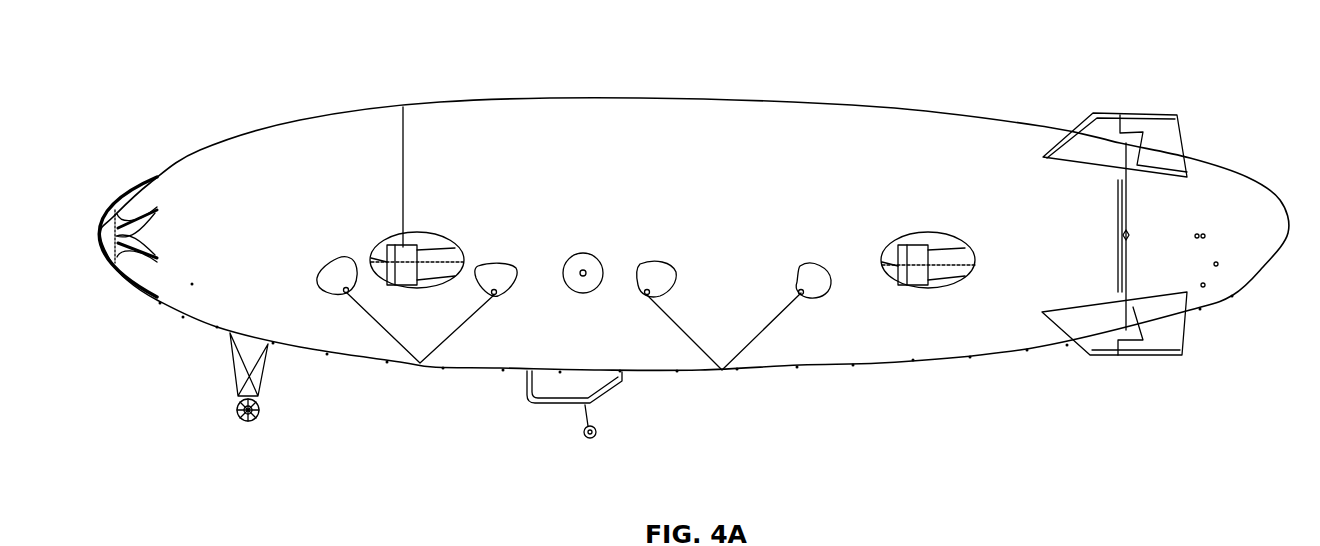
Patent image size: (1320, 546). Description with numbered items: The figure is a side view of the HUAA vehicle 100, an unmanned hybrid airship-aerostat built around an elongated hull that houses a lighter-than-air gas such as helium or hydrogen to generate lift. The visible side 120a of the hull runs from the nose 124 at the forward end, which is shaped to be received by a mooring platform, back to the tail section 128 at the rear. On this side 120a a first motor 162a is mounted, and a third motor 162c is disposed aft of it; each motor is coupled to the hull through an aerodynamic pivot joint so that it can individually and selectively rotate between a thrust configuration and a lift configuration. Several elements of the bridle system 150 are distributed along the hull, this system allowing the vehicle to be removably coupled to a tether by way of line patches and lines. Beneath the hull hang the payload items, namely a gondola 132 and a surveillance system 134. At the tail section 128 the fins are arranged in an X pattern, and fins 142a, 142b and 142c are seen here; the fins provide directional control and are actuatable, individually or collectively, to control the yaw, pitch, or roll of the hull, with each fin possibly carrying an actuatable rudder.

The HUAA vehicle 100 is at (214, 74).
The side of the hull 120a is at (560, 160).
The nose 124 is at (100, 237).
The tail section 128 is at (1172, 232).
The gondola 132 is at (607, 400).
The surveillance system 134 is at (238, 402).
The fin 142a is at (1077, 127).
The fin 142b is at (1140, 358).
The fin 142c is at (296, 538).
The bridle system 150 is at (320, 280).
The first motor 162a is at (408, 284).
The third motor 162c is at (917, 278).